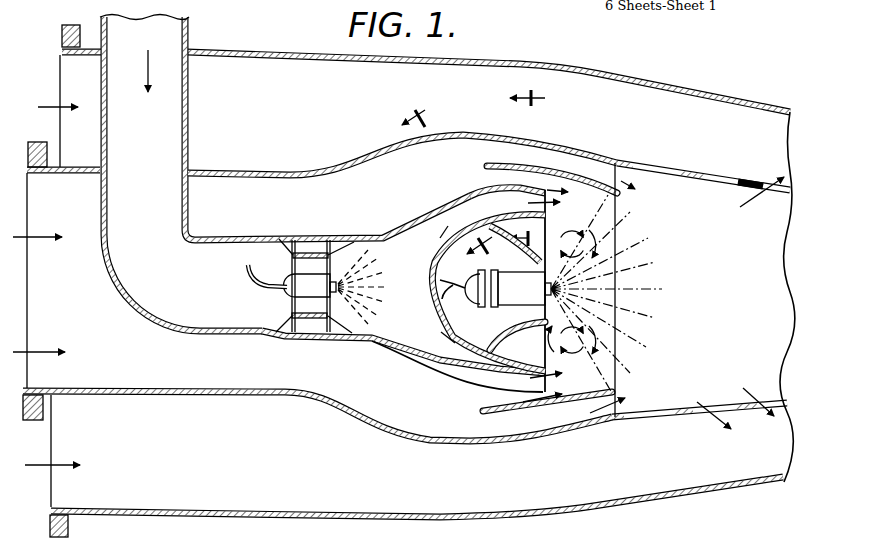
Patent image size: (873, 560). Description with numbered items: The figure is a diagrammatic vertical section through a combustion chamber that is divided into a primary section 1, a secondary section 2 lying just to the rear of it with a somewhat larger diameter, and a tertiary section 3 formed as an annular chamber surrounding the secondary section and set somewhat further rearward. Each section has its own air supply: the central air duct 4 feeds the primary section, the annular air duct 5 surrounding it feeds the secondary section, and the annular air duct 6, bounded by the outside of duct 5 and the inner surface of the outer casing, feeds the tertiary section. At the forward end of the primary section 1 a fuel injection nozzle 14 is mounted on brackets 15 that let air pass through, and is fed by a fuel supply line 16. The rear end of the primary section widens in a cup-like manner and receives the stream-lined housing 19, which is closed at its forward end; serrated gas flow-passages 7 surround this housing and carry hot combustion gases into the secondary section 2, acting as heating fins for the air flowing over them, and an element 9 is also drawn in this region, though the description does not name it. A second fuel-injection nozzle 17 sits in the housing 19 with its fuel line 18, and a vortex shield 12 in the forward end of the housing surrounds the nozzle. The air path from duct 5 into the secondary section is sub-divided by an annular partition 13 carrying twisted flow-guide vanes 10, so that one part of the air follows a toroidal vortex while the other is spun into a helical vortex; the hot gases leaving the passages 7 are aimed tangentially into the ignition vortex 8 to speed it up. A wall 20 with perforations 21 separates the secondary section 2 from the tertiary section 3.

The primary section 1 is at (384, 247).
The secondary section 2 is at (698, 256).
The tertiary section 3 is at (710, 135).
The air duct 4 is at (191, 36).
The air duct 5 is at (130, 360).
The air duct 6 is at (200, 454).
The gas flow-passages 7 is at (472, 203).
The ignition vortex 8 is at (589, 344).
The flame tube wall 9 is at (463, 373).
The flow-guide vanes 10 is at (558, 150).
The vortex shield 12 is at (510, 337).
The annular partition 13 is at (582, 174).
The fuel injection nozzle 14 is at (295, 283).
The brackets 15 is at (355, 240).
The fuel supply line 16 is at (251, 289).
The fuel-injection nozzle 17 is at (512, 297).
The fuel line 18 is at (451, 297).
The stream-lined housing 19 is at (440, 244).
The wall 20 is at (748, 185).
The perforations 21 is at (736, 164).